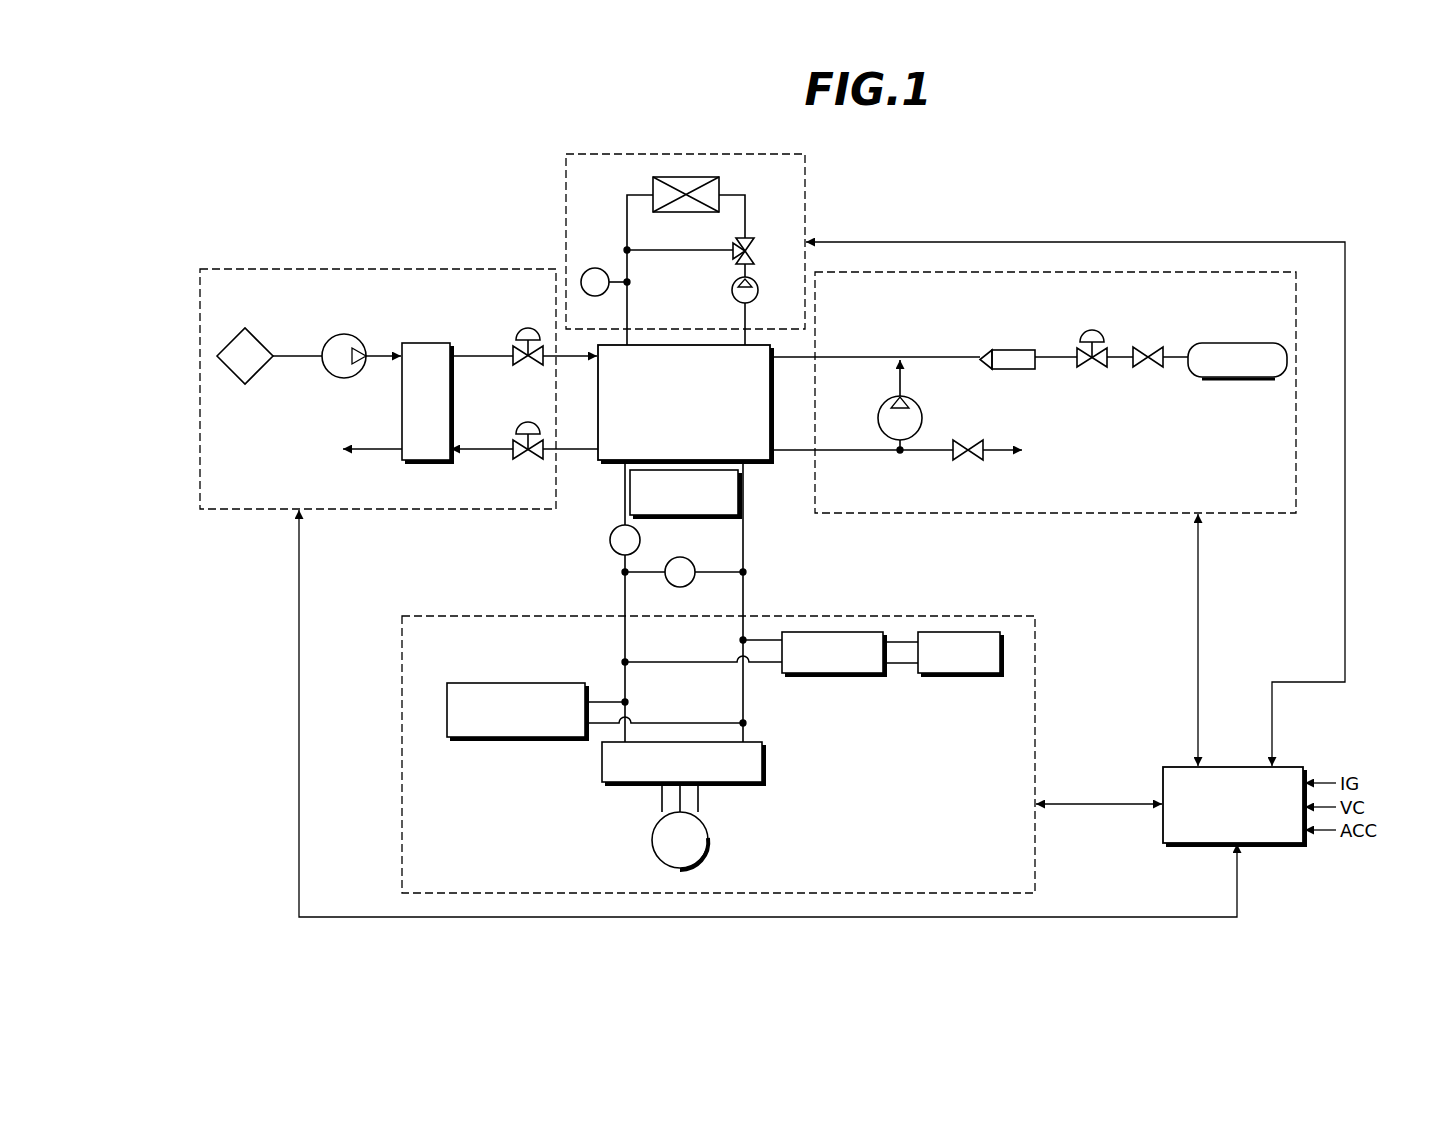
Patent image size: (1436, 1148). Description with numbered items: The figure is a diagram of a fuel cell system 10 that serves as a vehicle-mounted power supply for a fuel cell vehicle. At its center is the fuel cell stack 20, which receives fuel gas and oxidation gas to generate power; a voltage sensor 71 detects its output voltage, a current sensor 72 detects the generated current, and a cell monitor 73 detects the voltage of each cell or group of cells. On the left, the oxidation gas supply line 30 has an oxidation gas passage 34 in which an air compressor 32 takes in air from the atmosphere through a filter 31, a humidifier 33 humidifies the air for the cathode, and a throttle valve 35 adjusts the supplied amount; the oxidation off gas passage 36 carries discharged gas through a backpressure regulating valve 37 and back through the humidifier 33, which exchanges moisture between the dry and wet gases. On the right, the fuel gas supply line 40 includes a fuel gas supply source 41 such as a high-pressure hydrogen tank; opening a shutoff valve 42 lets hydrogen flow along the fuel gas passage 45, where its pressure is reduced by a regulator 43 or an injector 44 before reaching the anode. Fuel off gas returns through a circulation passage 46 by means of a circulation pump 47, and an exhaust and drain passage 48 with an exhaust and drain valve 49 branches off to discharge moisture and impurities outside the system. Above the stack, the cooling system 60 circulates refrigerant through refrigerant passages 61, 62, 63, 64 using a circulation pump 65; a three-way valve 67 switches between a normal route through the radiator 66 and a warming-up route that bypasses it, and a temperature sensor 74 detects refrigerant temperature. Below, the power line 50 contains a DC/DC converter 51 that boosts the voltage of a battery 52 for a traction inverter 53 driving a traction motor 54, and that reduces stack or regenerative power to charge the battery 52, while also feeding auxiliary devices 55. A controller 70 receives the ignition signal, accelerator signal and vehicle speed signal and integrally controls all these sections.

The fuel cell system 10 is at (1086, 190).
The fuel cell stack 20 is at (750, 461).
The oxidation gas supply line 30 is at (351, 267).
The filter 31 is at (257, 342).
The air compressor 32 is at (343, 334).
The humidifier 33 is at (425, 343).
The oxidation gas passage 34 is at (468, 355).
The throttle valve 35 is at (527, 328).
The oxidation off gas passage 36 is at (466, 448).
The backpressure regulating valve 37 is at (527, 422).
The fuel gas supply line 40 is at (1237, 514).
The fuel gas supply source 41 is at (1235, 343).
The shutoff valve 42 is at (1150, 348).
The regulator 43 is at (1095, 330).
The injector 44 is at (1010, 350).
The fuel gas passage 45 is at (837, 356).
The circulation passage 46 is at (828, 449).
The circulation pump 47 is at (922, 419).
The exhaust and drain passage 48 is at (997, 449).
The exhaust and drain valve 49 is at (964, 462).
The power line 50 is at (1037, 642).
The DC/DC converter 51 is at (832, 674).
The battery 52 is at (952, 674).
The traction inverter 53 is at (764, 765).
The traction motor 54 is at (711, 838).
The auxiliary devices 55 is at (536, 683).
The cooling system 60 is at (806, 162).
The refrigerant passage 61 is at (750, 302).
The refrigerant passage 62 is at (710, 251).
The refrigerant passage 63 is at (629, 296).
The refrigerant passage 64 is at (735, 196).
The circulation pump 65 is at (758, 282).
The radiator 66 is at (690, 212).
The three-way valve 67 is at (751, 239).
The controller 70 is at (1290, 767).
The voltage sensor 71 is at (692, 584).
The current sensor 72 is at (612, 553).
The cell monitor 73 is at (692, 516).
The temperature sensor 74 is at (597, 268).